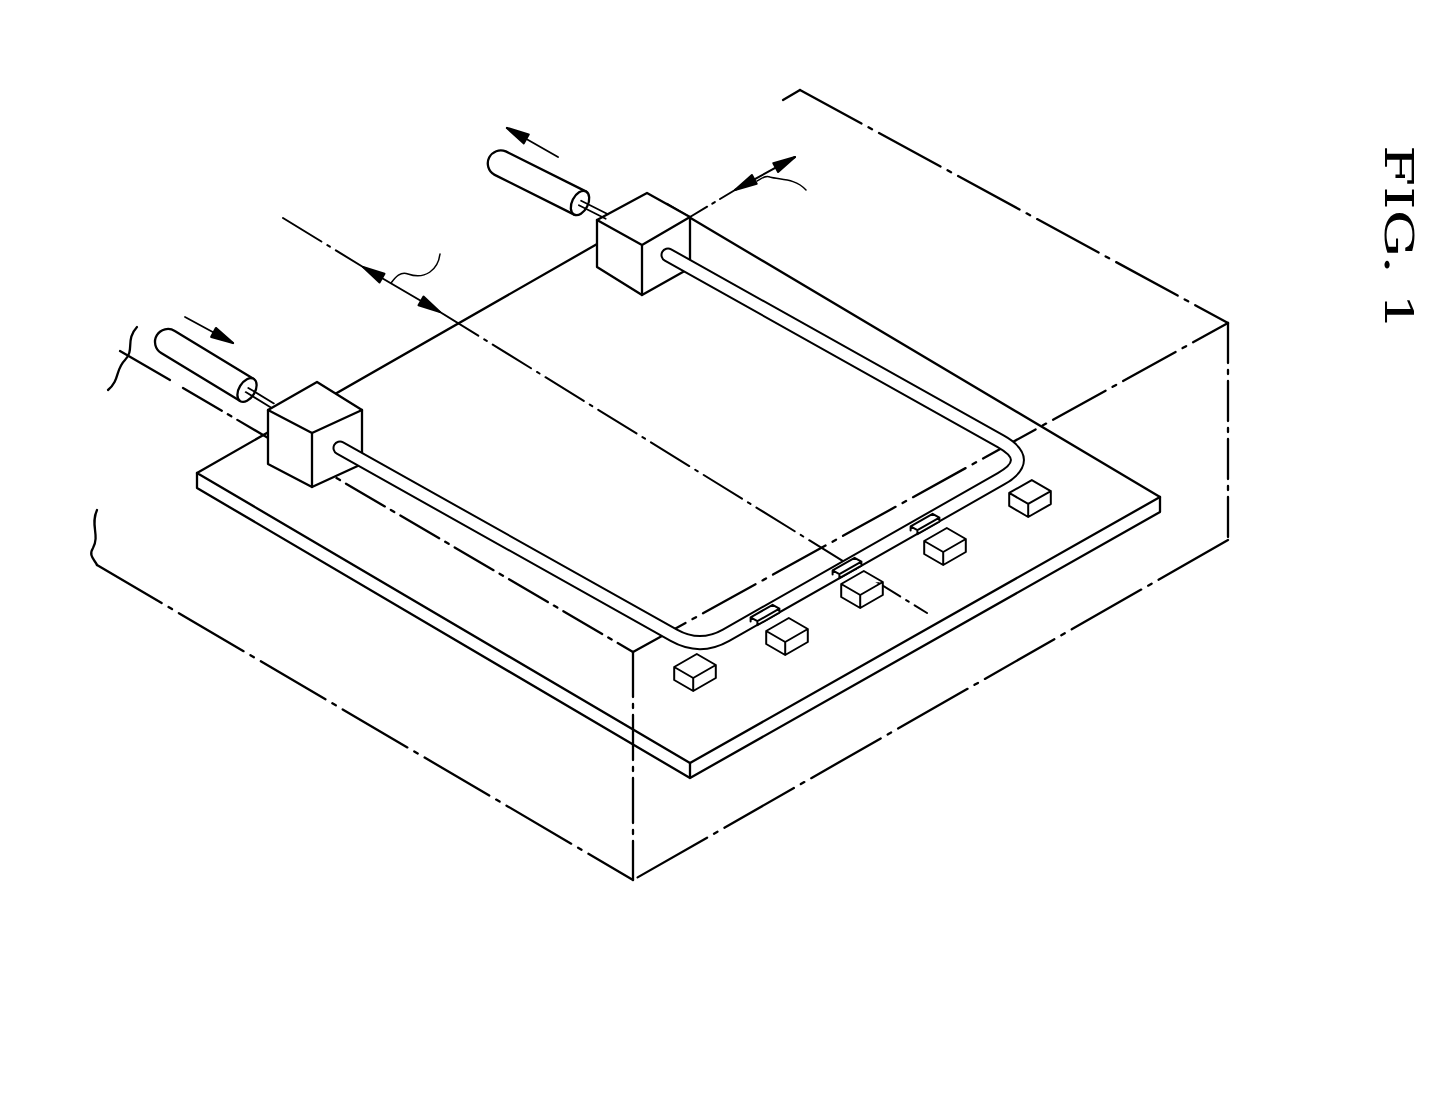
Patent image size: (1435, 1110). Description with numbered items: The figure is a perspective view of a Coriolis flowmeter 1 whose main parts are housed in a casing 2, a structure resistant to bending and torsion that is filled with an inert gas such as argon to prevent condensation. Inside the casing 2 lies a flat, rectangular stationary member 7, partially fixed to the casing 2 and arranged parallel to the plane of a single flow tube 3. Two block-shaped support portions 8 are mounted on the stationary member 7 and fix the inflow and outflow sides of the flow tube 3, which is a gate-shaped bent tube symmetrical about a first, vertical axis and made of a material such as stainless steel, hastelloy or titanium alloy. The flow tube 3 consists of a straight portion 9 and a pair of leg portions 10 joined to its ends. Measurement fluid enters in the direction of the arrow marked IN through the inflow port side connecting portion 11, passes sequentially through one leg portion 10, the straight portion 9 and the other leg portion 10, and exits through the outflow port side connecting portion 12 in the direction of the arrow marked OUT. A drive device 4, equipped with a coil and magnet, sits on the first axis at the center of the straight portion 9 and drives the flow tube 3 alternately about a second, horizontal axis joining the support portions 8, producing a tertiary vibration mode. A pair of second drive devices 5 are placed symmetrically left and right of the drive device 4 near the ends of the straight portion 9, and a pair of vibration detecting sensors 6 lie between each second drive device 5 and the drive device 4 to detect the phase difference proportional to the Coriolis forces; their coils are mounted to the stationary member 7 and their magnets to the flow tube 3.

The Coriolis flowmeter 1 is at (659, 474).
The casing 2 is at (1067, 223).
The flow tube 3 is at (678, 449).
The drive device 4 is at (843, 557).
The second drive device 5 is at (1040, 475).
The vibration detecting sensor 6 is at (957, 553).
The stationary member 7 is at (428, 613).
The support portion 8 is at (317, 407).
The straight portion 9 is at (814, 594).
The leg portion 10 is at (800, 328).
The inflow port side connecting portion 11 is at (200, 362).
The outflow port side connecting portion 12 is at (523, 172).